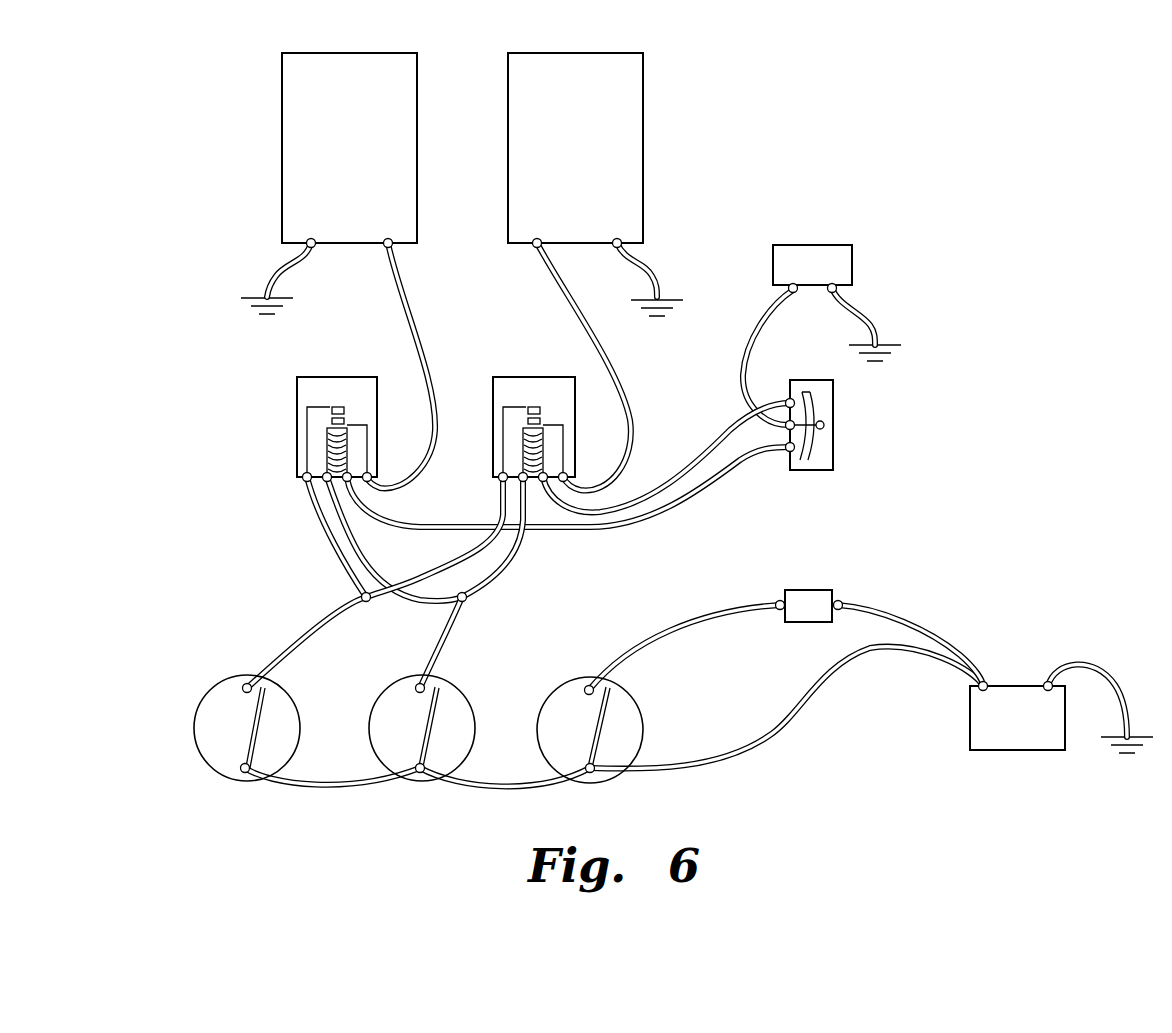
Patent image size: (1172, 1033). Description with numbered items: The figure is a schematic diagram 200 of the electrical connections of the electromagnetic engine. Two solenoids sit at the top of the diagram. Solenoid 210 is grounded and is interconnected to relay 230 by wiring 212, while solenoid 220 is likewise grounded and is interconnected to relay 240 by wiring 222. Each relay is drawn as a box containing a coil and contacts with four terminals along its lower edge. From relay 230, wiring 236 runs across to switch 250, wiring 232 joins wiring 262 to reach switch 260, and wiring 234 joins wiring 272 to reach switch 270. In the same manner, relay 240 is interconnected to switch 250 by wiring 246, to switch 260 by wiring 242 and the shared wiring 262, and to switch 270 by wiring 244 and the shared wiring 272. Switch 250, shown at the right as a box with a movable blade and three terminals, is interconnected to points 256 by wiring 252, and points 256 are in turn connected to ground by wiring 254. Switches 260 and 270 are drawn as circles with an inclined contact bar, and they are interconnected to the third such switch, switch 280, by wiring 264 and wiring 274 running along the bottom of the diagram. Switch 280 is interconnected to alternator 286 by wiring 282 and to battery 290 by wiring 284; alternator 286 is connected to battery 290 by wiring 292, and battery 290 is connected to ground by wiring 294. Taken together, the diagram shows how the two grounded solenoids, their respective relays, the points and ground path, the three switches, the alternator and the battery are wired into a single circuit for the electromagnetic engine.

The schematic diagram 200 is at (940, 148).
The solenoid 210 is at (372, 210).
The wiring 212 is at (405, 284).
The solenoid 220 is at (600, 210).
The wiring 222 is at (598, 338).
The relay 230 is at (333, 377).
The wiring 232 is at (323, 537).
The wiring 234 is at (362, 530).
The wiring 236 is at (730, 497).
The relay 240 is at (532, 377).
The wiring 242 is at (497, 507).
The wiring 244 is at (513, 570).
The wiring 246 is at (690, 440).
The switch 250 is at (833, 422).
The wiring 252 is at (752, 362).
The wiring 254 is at (872, 317).
The points 256 is at (853, 264).
The switch 260 is at (200, 703).
The wiring 262 is at (297, 629).
The wiring 264 is at (327, 788).
The switch 270 is at (374, 702).
The wiring 272 is at (438, 637).
The wiring 274 is at (490, 790).
The switch 280 is at (545, 702).
The wiring 282 is at (703, 615).
The wiring 284 is at (733, 760).
The alternator 286 is at (818, 590).
The battery 290 is at (1015, 752).
The wiring 292 is at (907, 612).
The wiring 294 is at (1095, 663).